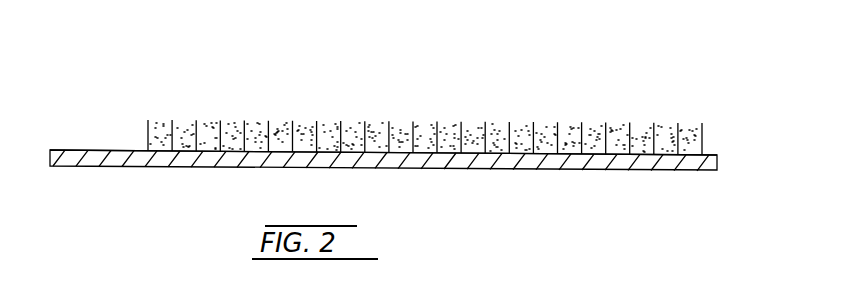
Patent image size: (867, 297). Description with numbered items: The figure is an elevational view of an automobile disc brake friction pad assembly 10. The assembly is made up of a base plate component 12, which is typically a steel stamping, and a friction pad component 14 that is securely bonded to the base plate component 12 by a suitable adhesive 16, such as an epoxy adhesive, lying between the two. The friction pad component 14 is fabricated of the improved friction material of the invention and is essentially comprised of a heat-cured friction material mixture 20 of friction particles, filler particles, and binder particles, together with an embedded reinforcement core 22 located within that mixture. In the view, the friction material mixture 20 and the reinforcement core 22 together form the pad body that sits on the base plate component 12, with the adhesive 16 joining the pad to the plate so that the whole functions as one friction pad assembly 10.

The friction pad assembly 10 is at (627, 60).
The base plate component 12 is at (640, 162).
The friction pad component 14 is at (432, 122).
The adhesive 16 is at (710, 153).
The heat-cured friction material mixture 20 is at (643, 125).
The embedded reinforcement core 22 is at (173, 122).